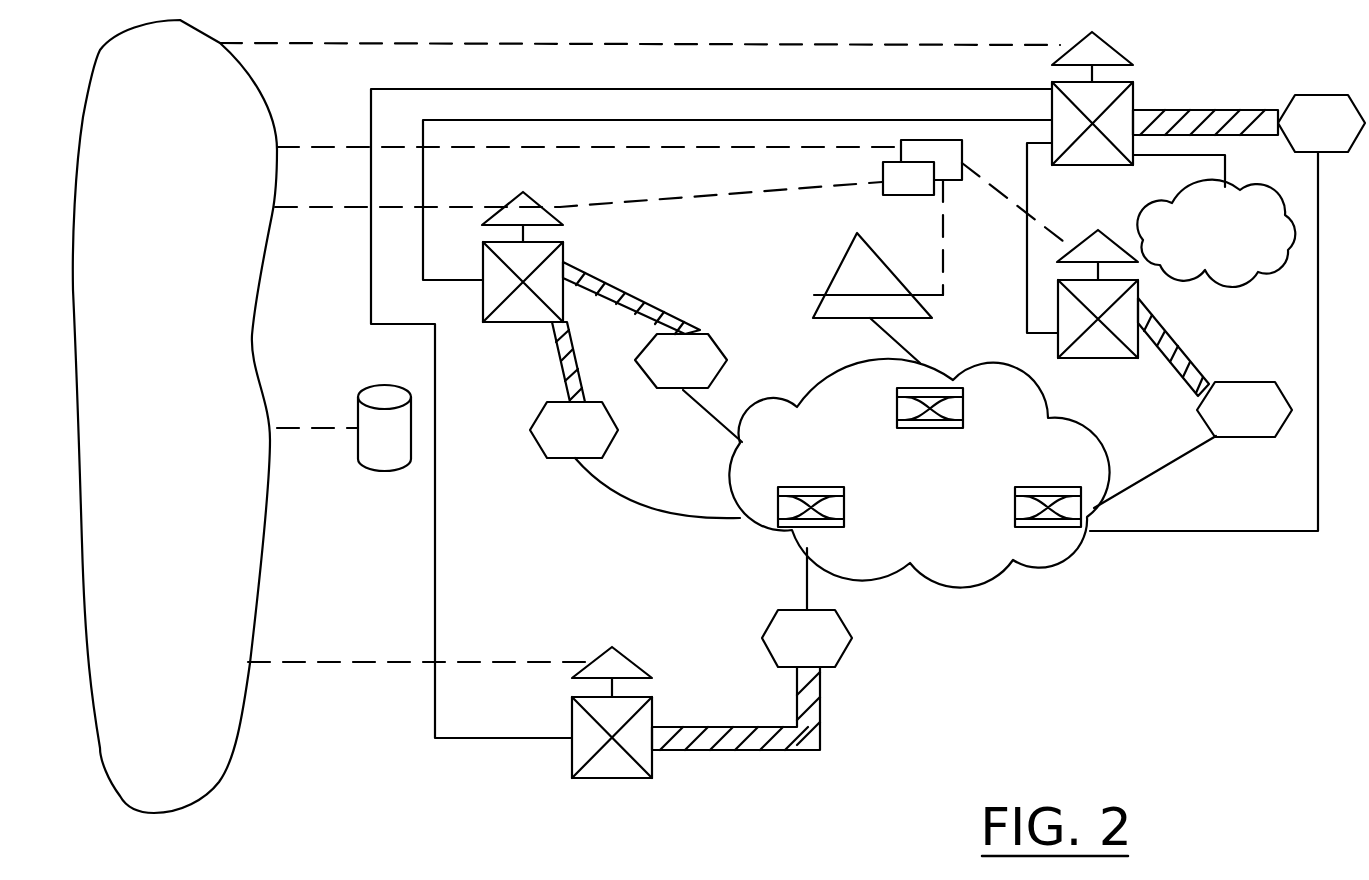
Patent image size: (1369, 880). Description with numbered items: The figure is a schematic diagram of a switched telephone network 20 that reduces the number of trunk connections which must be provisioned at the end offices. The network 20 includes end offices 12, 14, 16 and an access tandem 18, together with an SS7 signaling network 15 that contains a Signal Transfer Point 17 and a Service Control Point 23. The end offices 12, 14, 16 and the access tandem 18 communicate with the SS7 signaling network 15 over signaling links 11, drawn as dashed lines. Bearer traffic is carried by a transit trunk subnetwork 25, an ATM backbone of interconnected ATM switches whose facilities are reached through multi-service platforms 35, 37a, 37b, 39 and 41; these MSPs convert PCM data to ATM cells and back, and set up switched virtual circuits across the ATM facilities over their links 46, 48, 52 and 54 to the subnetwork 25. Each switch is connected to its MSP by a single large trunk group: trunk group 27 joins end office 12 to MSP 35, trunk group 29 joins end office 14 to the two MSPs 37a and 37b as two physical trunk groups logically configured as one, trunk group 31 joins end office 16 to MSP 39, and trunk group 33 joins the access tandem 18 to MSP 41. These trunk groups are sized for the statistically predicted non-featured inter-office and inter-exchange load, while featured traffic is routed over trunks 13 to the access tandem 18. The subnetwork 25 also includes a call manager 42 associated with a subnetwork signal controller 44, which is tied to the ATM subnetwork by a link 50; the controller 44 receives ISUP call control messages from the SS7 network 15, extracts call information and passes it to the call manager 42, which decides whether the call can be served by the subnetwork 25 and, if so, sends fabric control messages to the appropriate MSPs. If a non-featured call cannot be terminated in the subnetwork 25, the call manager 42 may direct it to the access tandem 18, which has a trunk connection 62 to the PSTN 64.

The signaling links 11 is at (855, 45).
The end office 12 is at (630, 657).
The voice trunk 13 is at (423, 243).
The end office 14 is at (497, 325).
The SS7 signaling network 15 is at (112, 800).
The end office 16 is at (1140, 293).
The Signal Transfer Point 17 is at (962, 162).
The access tandem 18 is at (1135, 95).
The switched telephone network 20 is at (479, 811).
The Service Control Point 23 is at (377, 395).
The transit trunk subnetwork 25 is at (1017, 599).
The large trunk group 27 is at (730, 727).
The large trunk group 29 is at (570, 368).
The large trunk group 31 is at (1178, 374).
The large trunk group 33 is at (1187, 112).
The multi-service platform 35 is at (852, 647).
The multi-service platform 37a is at (727, 362).
The multi-service platform 37b is at (530, 432).
The multi-service platform 39 is at (1253, 382).
The multi-service platform 41 is at (1310, 93).
The call manager 42 is at (840, 257).
The subnetwork signal controller 44 is at (817, 297).
The link 46 is at (807, 580).
The link 48 is at (698, 405).
The link 50 is at (902, 346).
The link 52 is at (1320, 315).
The link 54 is at (1184, 456).
The trunk connection 62 is at (1227, 178).
The PSTN 64 is at (1264, 287).